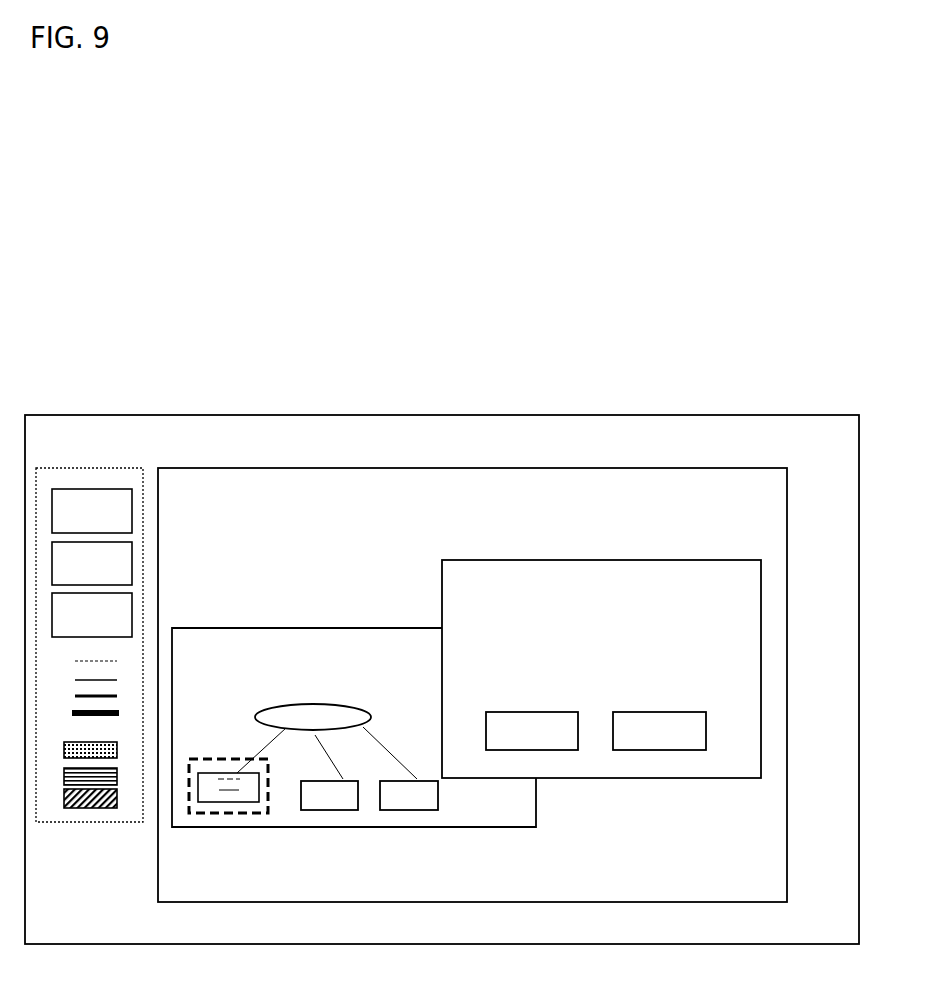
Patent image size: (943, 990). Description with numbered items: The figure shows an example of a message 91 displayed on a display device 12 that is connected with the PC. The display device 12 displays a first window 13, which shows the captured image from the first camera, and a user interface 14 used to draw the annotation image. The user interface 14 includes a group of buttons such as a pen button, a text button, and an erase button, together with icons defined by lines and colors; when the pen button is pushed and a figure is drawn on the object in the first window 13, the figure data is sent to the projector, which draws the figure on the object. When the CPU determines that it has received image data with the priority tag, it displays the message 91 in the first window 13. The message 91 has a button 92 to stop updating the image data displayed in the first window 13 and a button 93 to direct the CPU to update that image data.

The display device 12 is at (568, 415).
The first window 13 is at (404, 468).
The user interface 14 is at (96, 467).
The message 91 is at (572, 560).
The button 92 is at (563, 750).
The button 93 is at (668, 750).